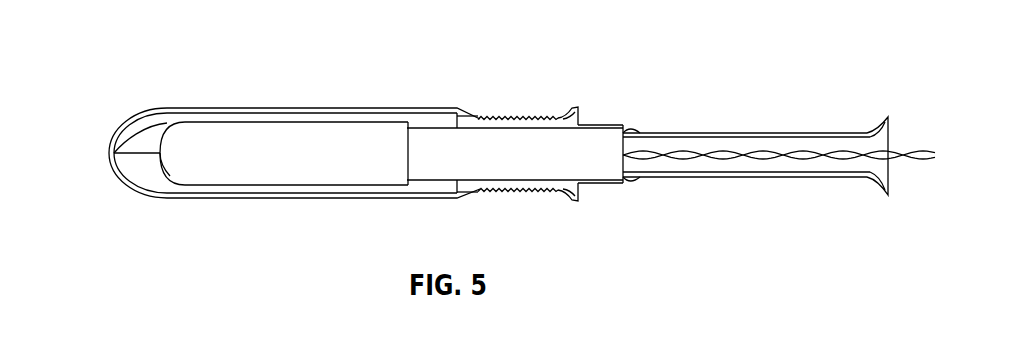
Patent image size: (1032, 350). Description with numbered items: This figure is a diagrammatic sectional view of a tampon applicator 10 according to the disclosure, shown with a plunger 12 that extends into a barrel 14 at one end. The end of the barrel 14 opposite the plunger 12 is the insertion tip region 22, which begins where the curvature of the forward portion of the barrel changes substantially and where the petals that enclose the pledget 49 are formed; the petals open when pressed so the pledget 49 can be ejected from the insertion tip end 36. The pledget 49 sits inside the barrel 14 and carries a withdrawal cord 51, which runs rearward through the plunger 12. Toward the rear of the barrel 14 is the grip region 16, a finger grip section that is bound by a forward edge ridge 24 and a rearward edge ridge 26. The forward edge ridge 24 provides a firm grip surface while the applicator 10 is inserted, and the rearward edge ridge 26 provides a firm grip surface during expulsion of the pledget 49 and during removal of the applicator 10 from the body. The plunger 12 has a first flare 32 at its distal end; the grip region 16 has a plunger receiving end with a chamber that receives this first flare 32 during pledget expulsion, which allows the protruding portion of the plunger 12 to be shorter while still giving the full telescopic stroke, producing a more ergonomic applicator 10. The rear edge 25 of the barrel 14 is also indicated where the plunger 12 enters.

The applicator 10 is at (348, 75).
The plunger 12 is at (689, 133).
The barrel 14 is at (283, 108).
The grip region 16 is at (503, 115).
The insertion tip region 22 is at (130, 108).
The forward edge ridge 24 is at (408, 123).
The rear end of barrel 25 is at (633, 193).
The rearward edge ridge 26 is at (575, 107).
The first flare 32 is at (886, 112).
The insertion tip end 36 is at (105, 168).
The pledget 49 is at (277, 162).
The withdrawal cord 51 is at (820, 145).